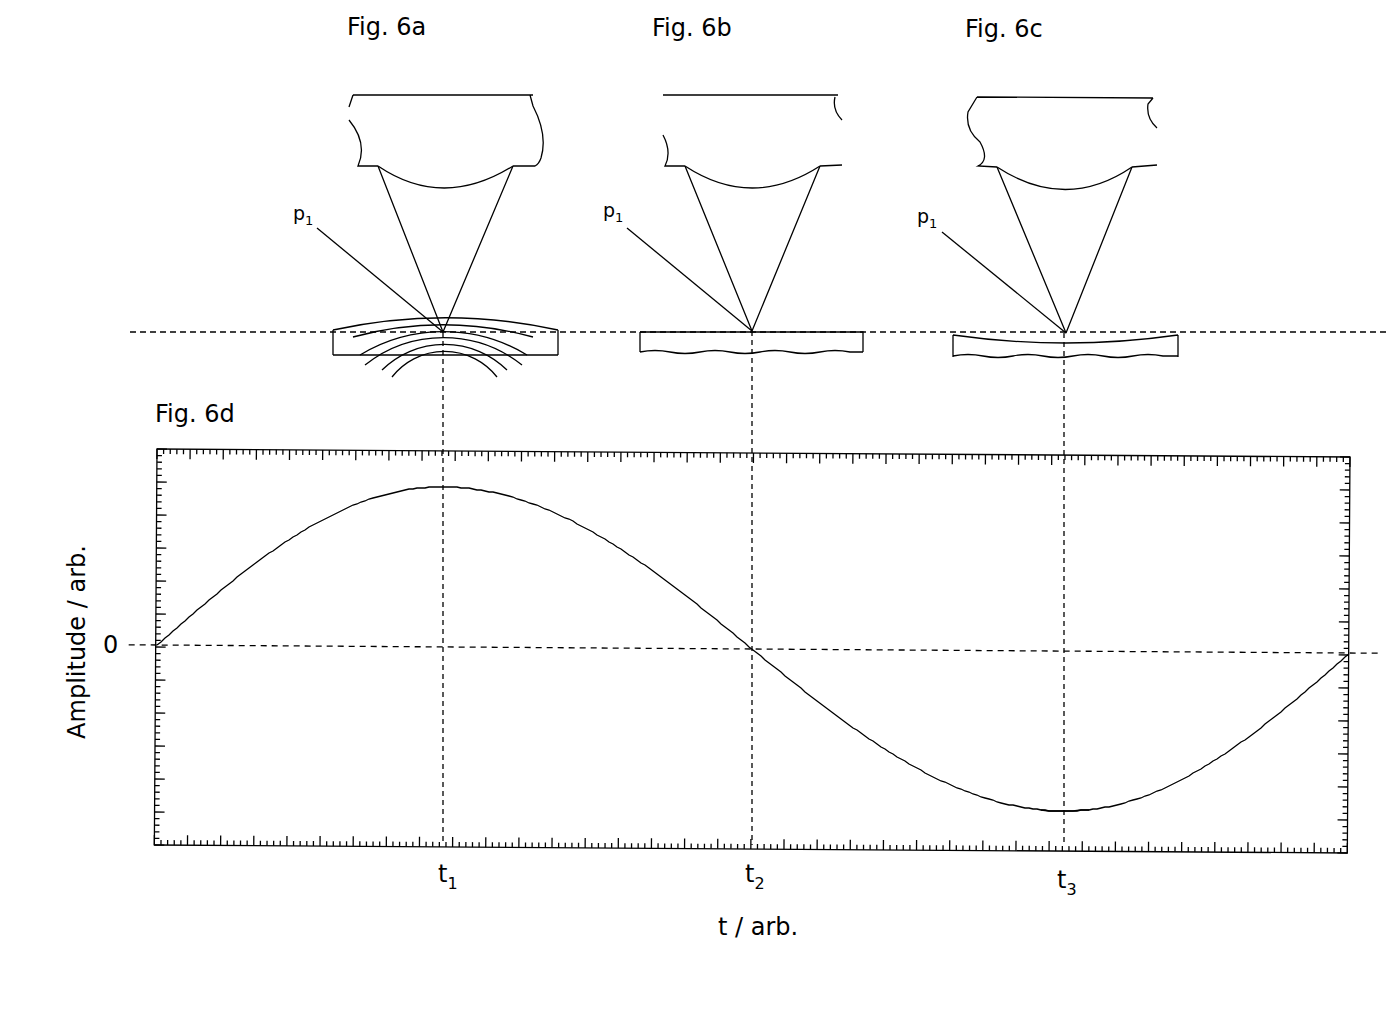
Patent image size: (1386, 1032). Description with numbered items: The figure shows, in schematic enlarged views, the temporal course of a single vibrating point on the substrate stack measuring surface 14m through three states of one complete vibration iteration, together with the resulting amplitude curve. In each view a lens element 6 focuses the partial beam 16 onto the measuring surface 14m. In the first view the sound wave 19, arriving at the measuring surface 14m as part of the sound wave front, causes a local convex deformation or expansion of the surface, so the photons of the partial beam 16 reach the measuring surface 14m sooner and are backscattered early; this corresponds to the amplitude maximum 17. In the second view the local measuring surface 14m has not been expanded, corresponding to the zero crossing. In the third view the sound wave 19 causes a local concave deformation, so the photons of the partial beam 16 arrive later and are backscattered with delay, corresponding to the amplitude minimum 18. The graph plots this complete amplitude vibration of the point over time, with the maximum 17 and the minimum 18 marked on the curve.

In FIG. 6a, the focusing lens / objective 6 is at (508, 137).
In FIG. 6b, the focusing lens / objective 6 is at (817, 135).
In FIG. 6c, the focusing lens / objective 6 is at (1130, 138).
In FIG. 6a, the partial beam 16 is at (470, 239).
In FIG. 6b, the partial beam 16 is at (777, 240).
In FIG. 6c, the partial beam 16 is at (1090, 240).
In FIG. 6a, the substrate stack measuring surface 14m is at (538, 343).
In FIG. 6b, the substrate stack measuring surface 14m is at (855, 342).
In FIG. 6c, the substrate stack measuring surface 14m is at (1168, 345).
In FIG. 6a, the sound wave 19 is at (507, 368).
In FIG. 6d, the maximum 17 is at (450, 490).
In FIG. 6d, the minimum 18 is at (1064, 812).